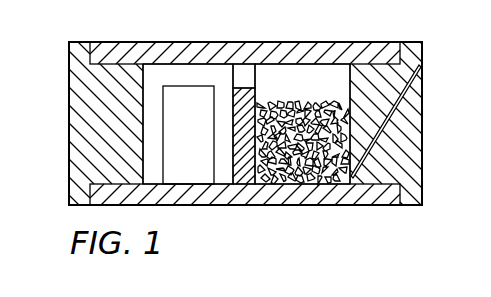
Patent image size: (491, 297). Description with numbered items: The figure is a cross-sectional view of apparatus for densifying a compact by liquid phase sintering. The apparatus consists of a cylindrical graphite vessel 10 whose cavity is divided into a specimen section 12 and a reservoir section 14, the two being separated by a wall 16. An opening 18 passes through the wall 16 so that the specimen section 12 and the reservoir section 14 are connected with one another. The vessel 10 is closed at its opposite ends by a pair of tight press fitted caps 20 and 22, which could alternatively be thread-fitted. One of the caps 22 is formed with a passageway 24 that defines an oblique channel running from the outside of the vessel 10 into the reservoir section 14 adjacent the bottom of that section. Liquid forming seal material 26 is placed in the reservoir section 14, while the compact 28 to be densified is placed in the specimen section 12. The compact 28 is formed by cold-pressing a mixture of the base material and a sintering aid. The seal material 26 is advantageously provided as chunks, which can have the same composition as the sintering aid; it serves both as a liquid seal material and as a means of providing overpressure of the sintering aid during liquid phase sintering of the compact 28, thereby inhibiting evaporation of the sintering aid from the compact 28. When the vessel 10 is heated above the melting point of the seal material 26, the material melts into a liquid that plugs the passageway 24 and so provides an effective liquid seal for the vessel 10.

The cylindrical graphite vessel 10 is at (342, 50).
The specimen section 12 is at (168, 72).
The reservoir section 14 is at (282, 78).
The wall 16 is at (243, 143).
The opening 18 is at (243, 88).
The cap 20 is at (77, 107).
The cap 22 is at (417, 132).
The passageway 24 is at (421, 68).
The liquid forming seal material 26 is at (320, 167).
The compact 28 is at (185, 163).